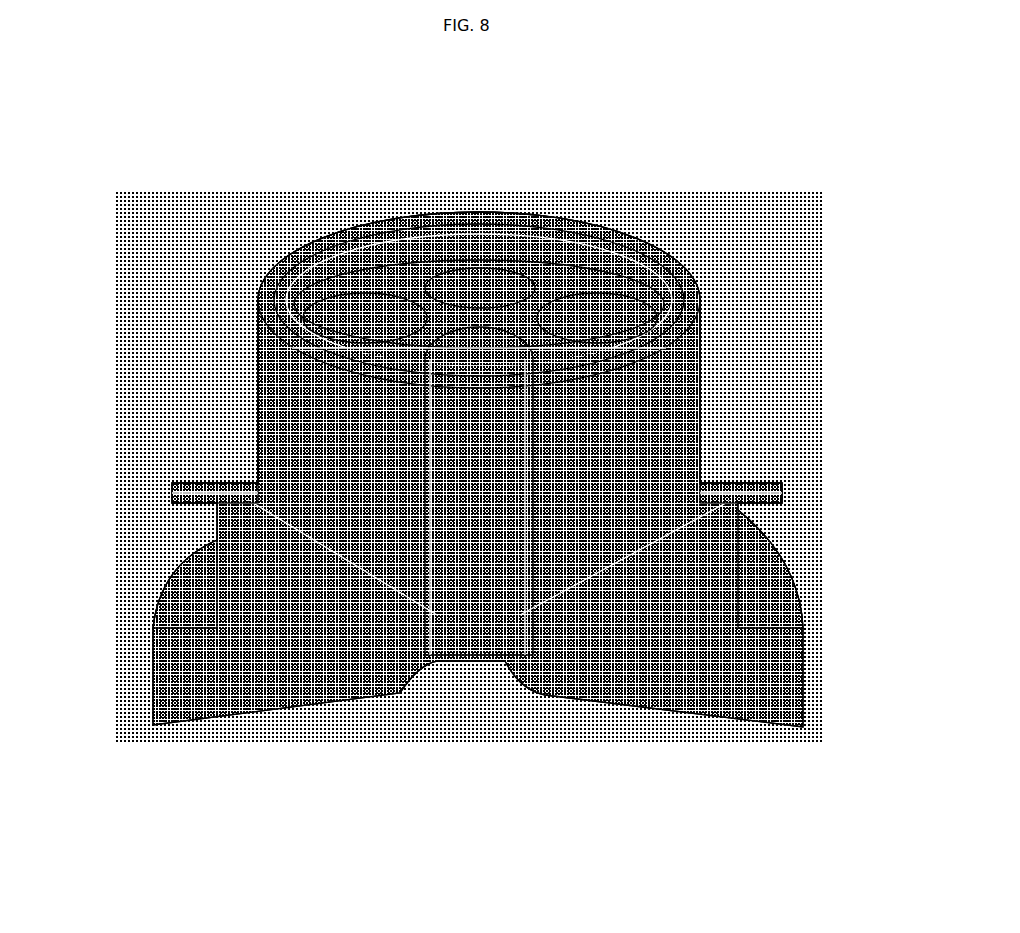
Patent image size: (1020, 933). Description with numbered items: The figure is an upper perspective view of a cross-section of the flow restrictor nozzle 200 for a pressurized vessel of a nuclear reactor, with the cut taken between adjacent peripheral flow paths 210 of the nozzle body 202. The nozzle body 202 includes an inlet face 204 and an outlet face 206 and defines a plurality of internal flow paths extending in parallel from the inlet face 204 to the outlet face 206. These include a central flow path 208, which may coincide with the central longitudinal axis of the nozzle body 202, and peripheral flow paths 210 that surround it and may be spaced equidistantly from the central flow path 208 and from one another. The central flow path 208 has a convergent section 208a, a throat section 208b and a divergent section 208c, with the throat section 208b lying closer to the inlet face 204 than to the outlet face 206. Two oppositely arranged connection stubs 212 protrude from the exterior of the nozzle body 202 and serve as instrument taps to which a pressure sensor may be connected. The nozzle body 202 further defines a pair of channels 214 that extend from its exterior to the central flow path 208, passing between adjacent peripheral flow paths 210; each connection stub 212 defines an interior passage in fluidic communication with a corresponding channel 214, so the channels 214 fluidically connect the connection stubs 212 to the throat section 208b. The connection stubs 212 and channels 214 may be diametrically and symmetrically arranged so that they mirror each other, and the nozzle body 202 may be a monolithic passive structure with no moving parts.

The flow restrictor nozzle 200 is at (491, 108).
The nozzle body 202 is at (697, 407).
The inlet face 204 is at (688, 715).
The outlet face 206 is at (367, 218).
The central flow path 208 is at (560, 213).
The convergent section 208a is at (503, 662).
The throat section 208b is at (470, 662).
The divergent section 208c is at (250, 385).
The peripheral flow paths 210 is at (628, 228).
The connection stub 212 is at (185, 482).
The channels 214 is at (215, 580).